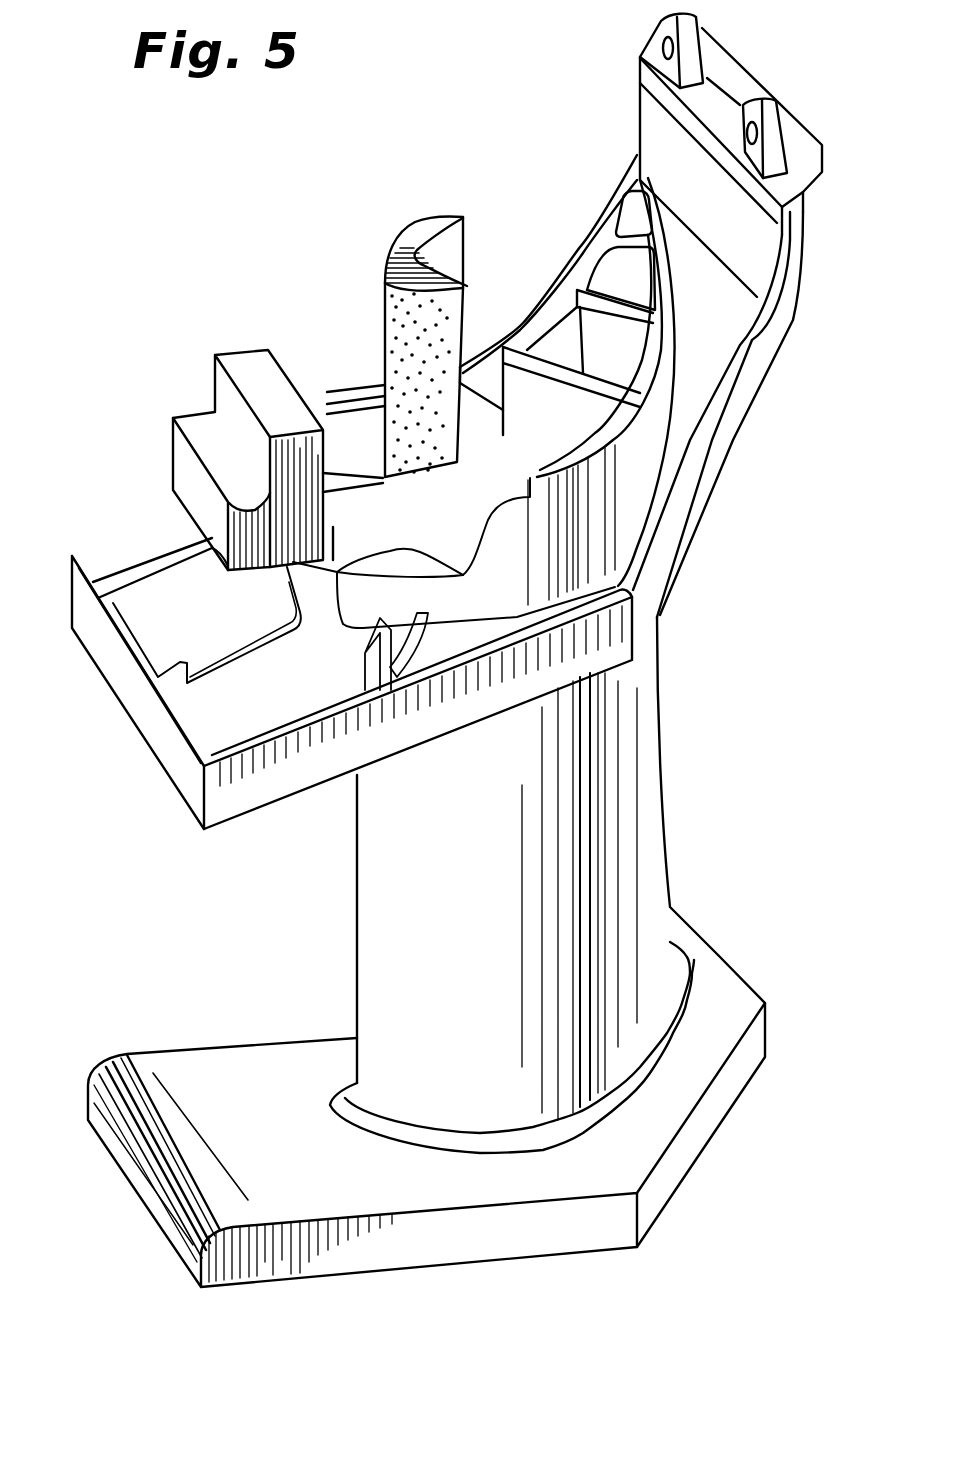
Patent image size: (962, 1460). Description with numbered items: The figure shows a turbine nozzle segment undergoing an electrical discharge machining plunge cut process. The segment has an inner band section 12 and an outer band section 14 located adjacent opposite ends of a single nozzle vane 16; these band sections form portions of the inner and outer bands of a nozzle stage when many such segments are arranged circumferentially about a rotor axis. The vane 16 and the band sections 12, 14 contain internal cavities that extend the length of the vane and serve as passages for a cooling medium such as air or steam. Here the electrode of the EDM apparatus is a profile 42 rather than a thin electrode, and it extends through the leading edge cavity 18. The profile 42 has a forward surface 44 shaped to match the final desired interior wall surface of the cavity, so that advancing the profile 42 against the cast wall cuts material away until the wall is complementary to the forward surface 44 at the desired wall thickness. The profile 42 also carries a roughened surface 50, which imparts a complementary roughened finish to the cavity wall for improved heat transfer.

The inner band section 12 is at (128, 1056).
The outer band section 14 is at (147, 722).
The nozzle vane 16 is at (385, 966).
The leading edge cavity 18 is at (337, 446).
The profile 42 is at (385, 262).
The forward surface 44 is at (380, 300).
The roughened surface 50 is at (398, 370).